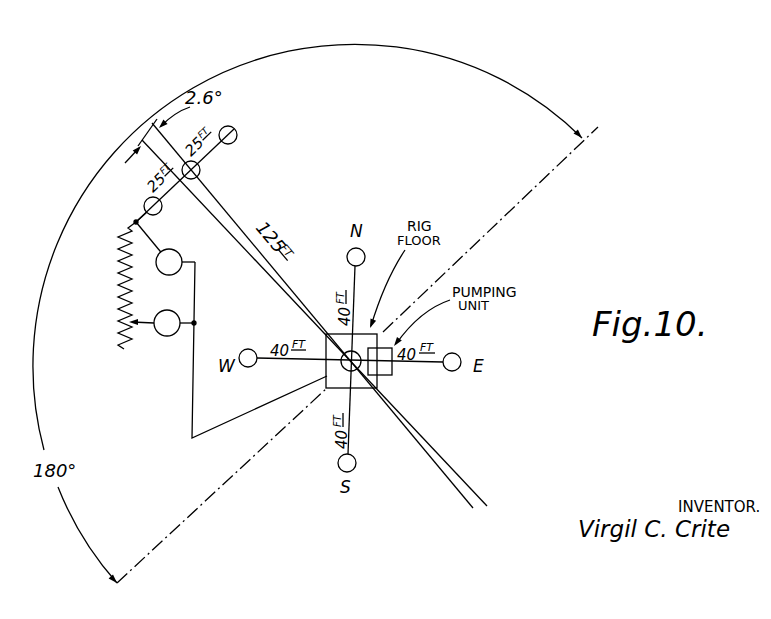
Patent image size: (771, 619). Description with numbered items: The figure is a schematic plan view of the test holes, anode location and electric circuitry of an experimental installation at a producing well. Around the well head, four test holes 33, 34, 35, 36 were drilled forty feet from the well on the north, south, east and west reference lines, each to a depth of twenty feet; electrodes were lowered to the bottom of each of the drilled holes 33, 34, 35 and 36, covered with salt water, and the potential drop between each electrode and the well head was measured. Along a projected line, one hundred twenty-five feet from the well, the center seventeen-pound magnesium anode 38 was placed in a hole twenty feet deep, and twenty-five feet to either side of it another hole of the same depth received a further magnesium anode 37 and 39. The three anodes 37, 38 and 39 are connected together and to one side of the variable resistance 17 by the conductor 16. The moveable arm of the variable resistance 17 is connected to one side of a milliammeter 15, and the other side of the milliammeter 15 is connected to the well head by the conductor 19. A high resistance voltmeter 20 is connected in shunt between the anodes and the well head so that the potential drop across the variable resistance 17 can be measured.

The milliammeter 15 is at (155, 337).
The conductor 16 is at (141, 208).
The variable resistance 17 is at (116, 292).
The conductor 19 is at (189, 420).
The high resistance voltmeter 20 is at (185, 252).
The drilled hole 33 is at (363, 466).
The drilled hole 34 is at (247, 369).
The drilled hole 35 is at (341, 250).
The drilled hole 36 is at (450, 375).
The magnesium anode 37 is at (240, 126).
The center magnesium anode 38 is at (204, 168).
The magnesium anode 39 is at (168, 203).